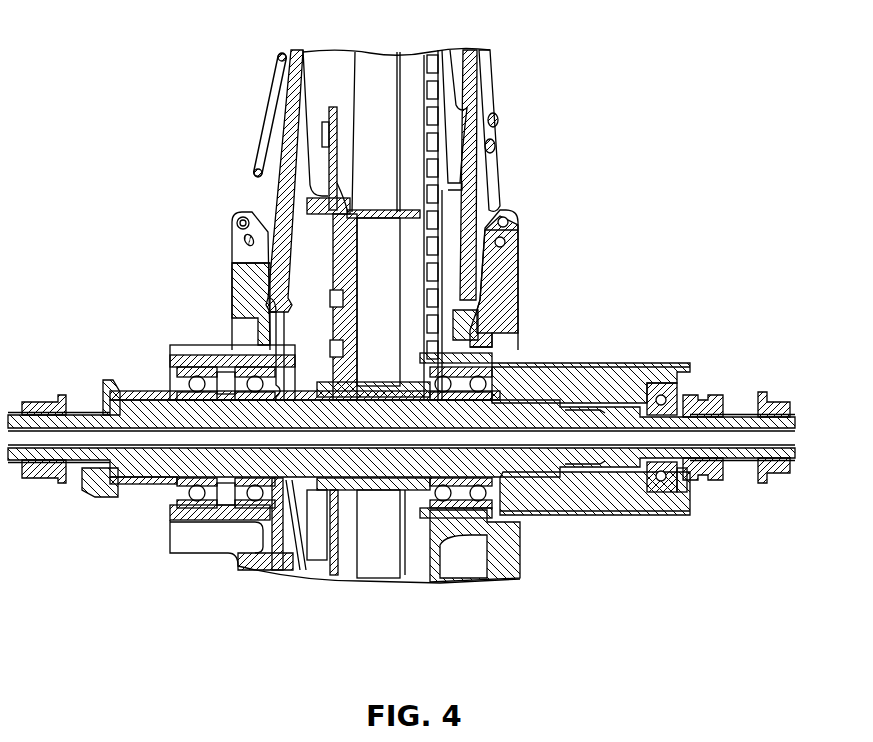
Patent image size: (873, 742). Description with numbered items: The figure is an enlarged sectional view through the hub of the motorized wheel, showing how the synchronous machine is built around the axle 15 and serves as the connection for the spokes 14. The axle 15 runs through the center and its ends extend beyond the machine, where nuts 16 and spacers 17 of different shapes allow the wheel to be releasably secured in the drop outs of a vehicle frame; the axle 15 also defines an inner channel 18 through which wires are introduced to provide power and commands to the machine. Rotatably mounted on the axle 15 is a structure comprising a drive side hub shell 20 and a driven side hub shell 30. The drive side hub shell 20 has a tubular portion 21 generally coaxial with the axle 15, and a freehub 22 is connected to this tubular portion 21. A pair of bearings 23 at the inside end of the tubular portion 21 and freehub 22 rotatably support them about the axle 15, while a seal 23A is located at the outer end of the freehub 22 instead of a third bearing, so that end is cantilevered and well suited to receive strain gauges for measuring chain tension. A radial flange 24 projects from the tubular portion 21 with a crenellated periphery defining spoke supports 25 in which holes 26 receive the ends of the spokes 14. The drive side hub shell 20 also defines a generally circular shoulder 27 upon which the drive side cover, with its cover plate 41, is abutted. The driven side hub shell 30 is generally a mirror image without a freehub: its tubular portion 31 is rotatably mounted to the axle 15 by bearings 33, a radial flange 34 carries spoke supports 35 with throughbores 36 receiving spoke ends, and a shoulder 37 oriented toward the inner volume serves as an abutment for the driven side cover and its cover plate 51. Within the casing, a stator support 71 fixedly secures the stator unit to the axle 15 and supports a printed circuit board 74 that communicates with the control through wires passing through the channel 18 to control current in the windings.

The spokes 14 is at (270, 112).
The axle 15 is at (44, 460).
The nuts 16 is at (40, 402).
The spacers 17 is at (98, 497).
The inner channel 18 is at (82, 432).
The drive side hub shell 20 is at (145, 188).
The tubular portion 21 is at (453, 343).
The freehub 22 is at (592, 377).
The bearings 23 is at (440, 512).
The seal 23A is at (645, 497).
The radial flange 24 is at (518, 283).
The spoke supports 25 is at (502, 210).
The holes 26 is at (508, 240).
The shoulder 27 is at (463, 283).
The driven side hub shell 30 is at (140, 265).
The tubular portion 31 is at (187, 348).
The bearings 33 is at (250, 367).
The radial flange 34 is at (232, 287).
The spoke supports 35 is at (238, 248).
The throughbores 36 is at (240, 218).
The shoulder 37 is at (270, 290).
The cover plate 41 is at (478, 107).
The cover plate 51 is at (282, 152).
The stator support 71 is at (387, 152).
The printed circuit board 74 is at (347, 340).